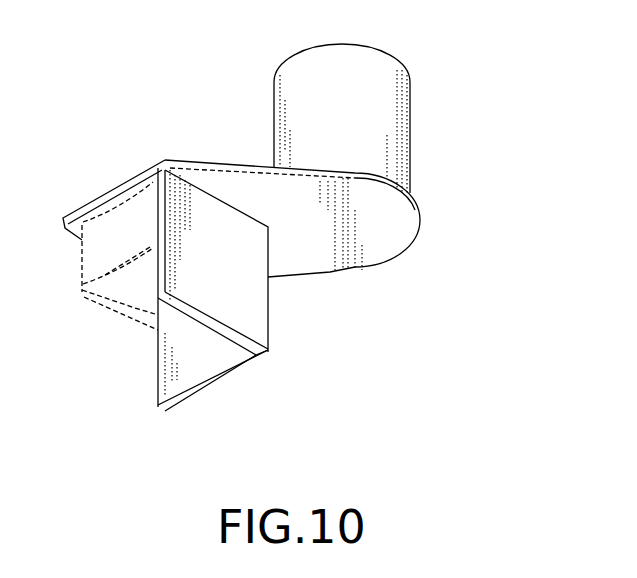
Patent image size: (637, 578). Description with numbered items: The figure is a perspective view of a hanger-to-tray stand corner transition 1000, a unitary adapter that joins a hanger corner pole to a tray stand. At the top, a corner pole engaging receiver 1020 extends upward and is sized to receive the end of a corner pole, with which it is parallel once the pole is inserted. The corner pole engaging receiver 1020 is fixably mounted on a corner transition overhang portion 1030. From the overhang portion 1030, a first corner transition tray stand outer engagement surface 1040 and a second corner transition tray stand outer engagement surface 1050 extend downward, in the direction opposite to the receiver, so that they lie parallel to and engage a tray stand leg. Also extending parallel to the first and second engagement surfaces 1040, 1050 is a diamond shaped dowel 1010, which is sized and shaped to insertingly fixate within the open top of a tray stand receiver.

The hanger-to-tray stand corner transition 1000 is at (241, 143).
The diamond shaped dowel 1010 is at (89, 296).
The corner pole engaging receiver 1020 is at (431, 118).
The corner transition overhang portion 1030 is at (447, 233).
The first corner transition tray stand outer engagement surface 1040 is at (292, 287).
The second corner transition tray stand outer engagement surface 1050 is at (272, 384).